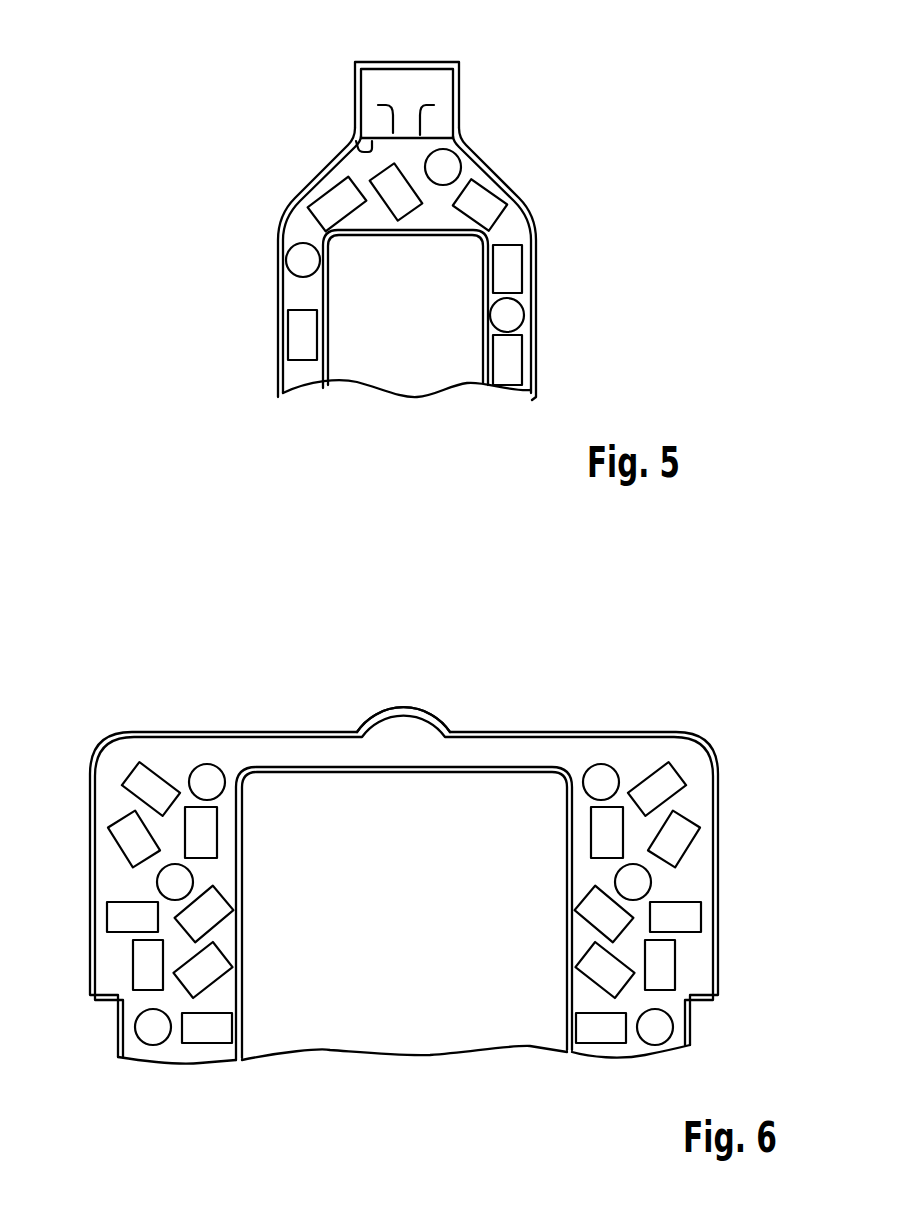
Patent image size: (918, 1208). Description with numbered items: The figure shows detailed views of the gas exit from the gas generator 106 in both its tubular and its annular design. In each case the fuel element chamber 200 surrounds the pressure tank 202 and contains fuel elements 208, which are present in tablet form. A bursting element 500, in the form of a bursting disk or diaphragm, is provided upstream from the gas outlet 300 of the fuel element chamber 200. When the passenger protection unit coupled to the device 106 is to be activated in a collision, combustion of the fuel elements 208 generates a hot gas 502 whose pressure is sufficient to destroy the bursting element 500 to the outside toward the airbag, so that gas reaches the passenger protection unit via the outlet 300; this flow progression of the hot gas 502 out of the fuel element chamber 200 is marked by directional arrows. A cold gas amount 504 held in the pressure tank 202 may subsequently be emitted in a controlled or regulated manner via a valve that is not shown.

In FIG. 5, the gas generator 106 is at (566, 68).
In FIG. 6, the gas generator 106 is at (707, 700).
In FIG. 5, the fuel element chamber 200 is at (531, 328).
In FIG. 6, the fuel element chamber 200 is at (718, 792).
In FIG. 5, the pressure tank 202 is at (488, 362).
In FIG. 6, the pressure tank 202 is at (500, 771).
In FIG. 5, the fuel elements 208 is at (515, 270).
In FIG. 6, the fuel elements 208 is at (680, 843).
In FIG. 5, the gas outlet 300 is at (460, 100).
In FIG. 5, the bursting element 500 is at (350, 144).
In FIG. 6, the bursting element 500 is at (398, 736).
In FIG. 5, the hot gas 502 is at (441, 103).
In FIG. 5, the cold gas amount 504 is at (405, 366).